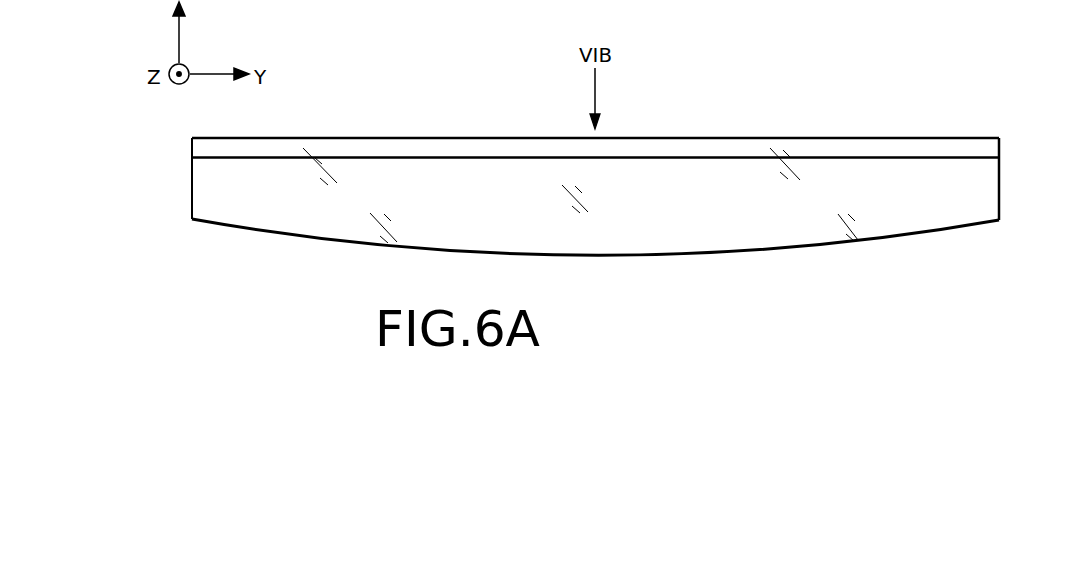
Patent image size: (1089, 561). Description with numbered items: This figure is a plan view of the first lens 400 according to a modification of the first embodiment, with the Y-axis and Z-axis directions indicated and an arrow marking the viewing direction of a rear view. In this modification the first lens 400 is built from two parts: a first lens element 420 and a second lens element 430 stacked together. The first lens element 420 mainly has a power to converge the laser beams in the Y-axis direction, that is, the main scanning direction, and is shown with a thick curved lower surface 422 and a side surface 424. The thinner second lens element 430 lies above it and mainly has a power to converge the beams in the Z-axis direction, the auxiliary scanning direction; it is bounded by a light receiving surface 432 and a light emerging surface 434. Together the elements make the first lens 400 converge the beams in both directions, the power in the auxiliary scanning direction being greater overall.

The first lens 400 is at (510, 92).
The first lens element 420 is at (1002, 188).
The curved bottom surface 422 is at (688, 257).
The side surface 424 is at (848, 158).
The second lens element 430 is at (1002, 147).
The light receiving surface 432 is at (828, 162).
The light emerging surface 434 is at (733, 137).